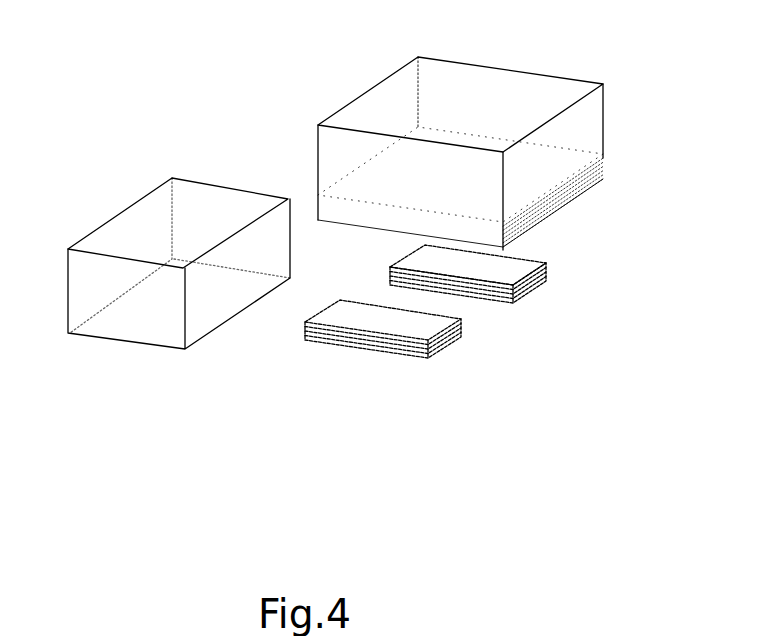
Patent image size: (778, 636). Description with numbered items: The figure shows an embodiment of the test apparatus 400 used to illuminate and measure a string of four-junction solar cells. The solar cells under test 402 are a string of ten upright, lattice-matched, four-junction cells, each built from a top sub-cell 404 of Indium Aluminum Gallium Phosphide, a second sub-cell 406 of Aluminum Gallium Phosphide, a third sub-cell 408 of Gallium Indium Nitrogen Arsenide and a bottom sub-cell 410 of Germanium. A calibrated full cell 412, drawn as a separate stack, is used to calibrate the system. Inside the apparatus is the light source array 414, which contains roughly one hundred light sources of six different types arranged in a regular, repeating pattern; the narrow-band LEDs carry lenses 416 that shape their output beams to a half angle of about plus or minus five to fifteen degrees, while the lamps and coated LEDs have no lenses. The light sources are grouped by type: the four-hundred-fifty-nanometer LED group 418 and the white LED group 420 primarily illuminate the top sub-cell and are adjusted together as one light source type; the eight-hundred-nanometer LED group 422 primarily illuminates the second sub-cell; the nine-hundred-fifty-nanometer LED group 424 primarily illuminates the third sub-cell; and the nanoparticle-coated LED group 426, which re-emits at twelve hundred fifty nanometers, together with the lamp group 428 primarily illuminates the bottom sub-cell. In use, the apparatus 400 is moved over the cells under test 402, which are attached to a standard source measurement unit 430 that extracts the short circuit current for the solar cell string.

The test apparatus 400 is at (334, 101).
The solar cells under test 402 is at (508, 318).
The top sub-cell 404 is at (547, 267).
The second sub-cell 406 is at (548, 271).
The third sub-cell 408 is at (549, 276).
The bottom sub-cell 410 is at (550, 280).
The calibrated full cell 412 is at (368, 360).
The light source array 414 is at (542, 168).
The lenses 416 is at (327, 222).
The 450 nm LED group 418 is at (608, 183).
The white LED group 420 is at (588, 195).
The 800 nm LED group 422 is at (575, 205).
The 950 nm LED group 424 is at (558, 218).
The 1250 nm emitting LED with nanoparticle group 426 is at (547, 232).
The lamp group 428 is at (527, 242).
The source measurement unit 430 is at (147, 220).